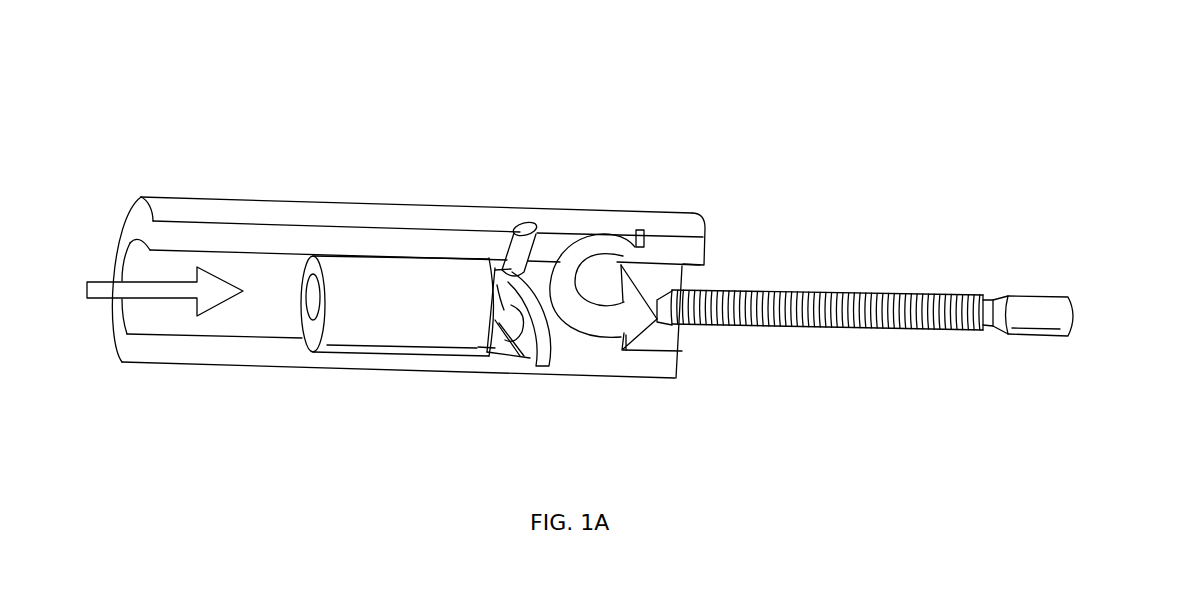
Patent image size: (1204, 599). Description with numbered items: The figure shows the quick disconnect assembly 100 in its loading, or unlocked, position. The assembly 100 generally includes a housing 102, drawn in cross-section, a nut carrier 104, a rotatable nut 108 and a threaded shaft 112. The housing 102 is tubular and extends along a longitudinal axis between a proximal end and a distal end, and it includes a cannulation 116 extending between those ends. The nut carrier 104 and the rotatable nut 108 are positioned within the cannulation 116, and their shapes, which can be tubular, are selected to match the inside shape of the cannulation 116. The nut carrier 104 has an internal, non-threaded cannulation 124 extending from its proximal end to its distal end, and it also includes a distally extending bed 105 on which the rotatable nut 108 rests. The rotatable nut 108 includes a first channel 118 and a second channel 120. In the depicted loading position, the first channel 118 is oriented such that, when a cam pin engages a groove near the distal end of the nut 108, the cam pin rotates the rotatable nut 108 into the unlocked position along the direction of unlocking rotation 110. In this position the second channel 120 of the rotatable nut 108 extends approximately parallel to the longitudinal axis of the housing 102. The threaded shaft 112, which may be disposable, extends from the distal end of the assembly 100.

The quick disconnect assembly 100 is at (159, 88).
The housing 102 is at (108, 257).
The nut carrier 104 is at (375, 268).
The distally extending bed 105 is at (610, 352).
The rotatable nut 108 is at (615, 281).
The direction of unlocking rotation 110 is at (616, 235).
The threaded shaft 112 is at (1077, 315).
The cannulation 116 is at (177, 322).
The first channel 118 is at (505, 357).
The second channel 120 is at (492, 303).
The internal non-threaded cannulation 124 is at (306, 290).